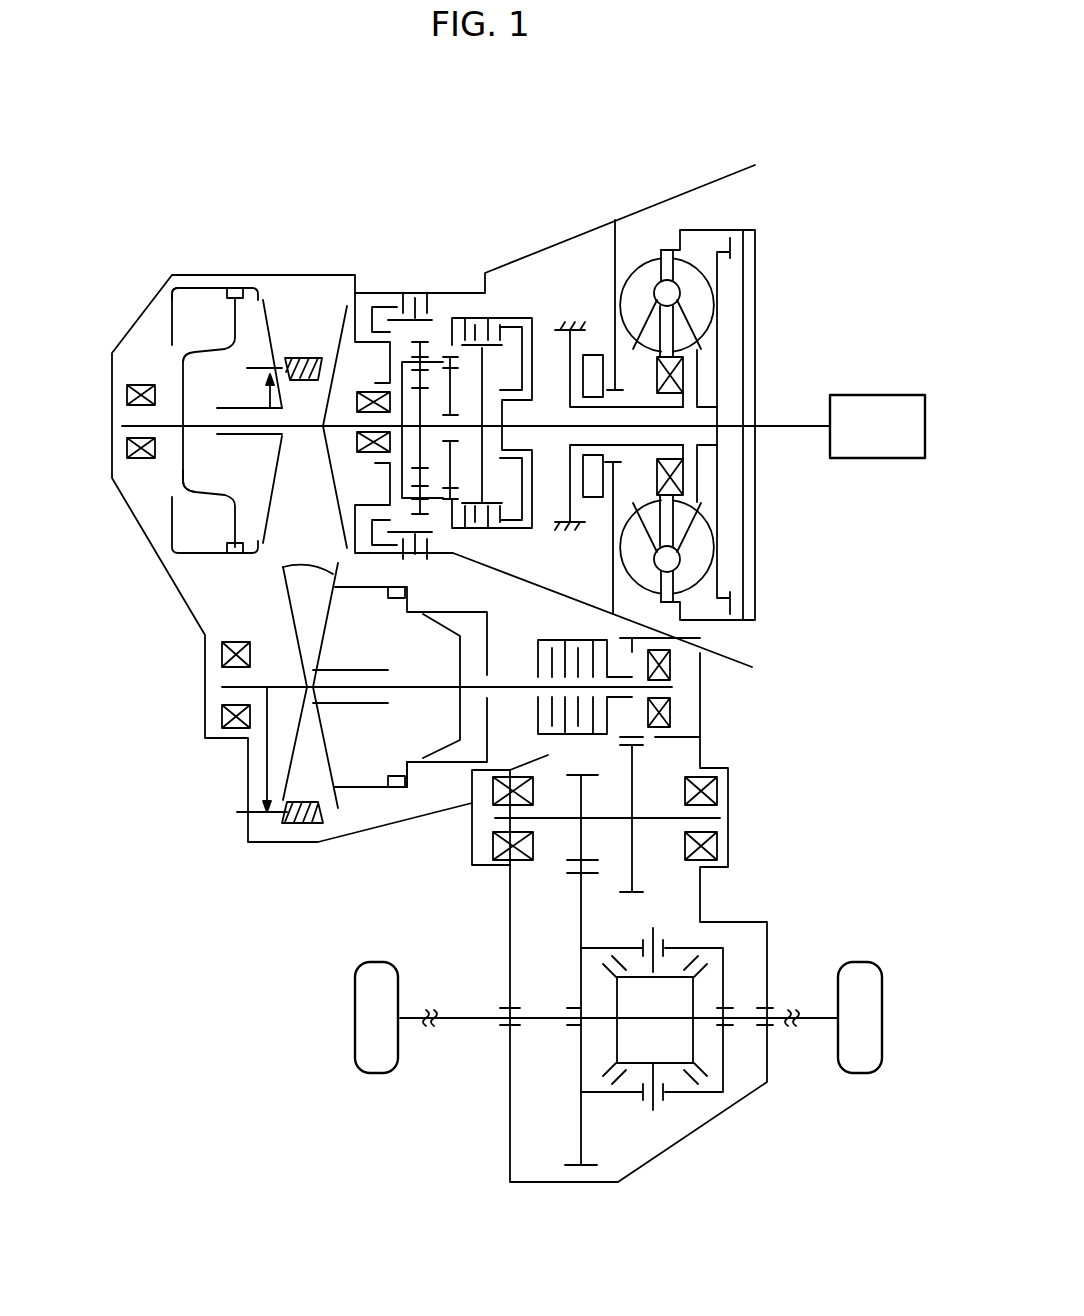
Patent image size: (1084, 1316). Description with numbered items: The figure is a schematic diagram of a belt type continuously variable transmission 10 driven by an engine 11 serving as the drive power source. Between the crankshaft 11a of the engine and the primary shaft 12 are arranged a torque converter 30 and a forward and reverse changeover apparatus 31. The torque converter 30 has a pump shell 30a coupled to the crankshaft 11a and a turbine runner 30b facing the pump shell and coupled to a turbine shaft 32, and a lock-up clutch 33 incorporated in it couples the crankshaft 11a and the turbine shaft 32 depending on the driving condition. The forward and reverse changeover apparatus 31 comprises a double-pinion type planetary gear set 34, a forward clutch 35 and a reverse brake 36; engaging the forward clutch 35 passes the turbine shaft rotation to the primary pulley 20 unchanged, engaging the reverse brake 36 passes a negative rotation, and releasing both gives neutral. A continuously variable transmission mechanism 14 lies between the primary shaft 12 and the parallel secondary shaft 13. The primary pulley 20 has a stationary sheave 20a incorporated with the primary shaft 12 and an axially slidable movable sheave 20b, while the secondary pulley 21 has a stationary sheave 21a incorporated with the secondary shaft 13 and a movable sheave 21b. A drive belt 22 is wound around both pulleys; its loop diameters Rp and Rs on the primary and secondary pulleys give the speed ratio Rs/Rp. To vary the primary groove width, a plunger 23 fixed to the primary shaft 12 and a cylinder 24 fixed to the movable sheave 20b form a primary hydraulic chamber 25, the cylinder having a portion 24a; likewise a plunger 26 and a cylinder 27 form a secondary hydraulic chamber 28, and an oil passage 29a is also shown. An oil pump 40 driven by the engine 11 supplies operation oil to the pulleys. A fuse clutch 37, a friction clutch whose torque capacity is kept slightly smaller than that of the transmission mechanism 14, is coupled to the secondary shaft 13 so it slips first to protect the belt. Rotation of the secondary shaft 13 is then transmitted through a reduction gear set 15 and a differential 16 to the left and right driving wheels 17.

The continuously variable transmission 10 is at (213, 175).
The engine 11 is at (905, 402).
The crankshaft 11a is at (795, 428).
The primary shaft 12 is at (125, 424).
The secondary shaft 13 is at (230, 687).
The continuously variable transmission mechanism 14 is at (228, 571).
The reduction gear set 15 is at (668, 763).
The differential 16 is at (695, 1103).
The driving wheels 17 is at (378, 1073).
The primary pulley 20 is at (288, 354).
The stationary sheave 20a is at (334, 376).
The movable sheave 20b is at (282, 300).
The secondary pulley 21 is at (227, 685).
The stationary sheave 21a is at (283, 596).
The movable sheave 21b is at (283, 568).
The drive belt 22 is at (306, 824).
The plunger 23 is at (207, 352).
The cylinder 24 is at (210, 290).
The piston portion 24a is at (165, 505).
The primary hydraulic chamber 25 is at (193, 473).
The plunger 26 is at (438, 752).
The cylinder 27 is at (372, 789).
The secondary hydraulic chamber 28 is at (447, 660).
The oil passage 29a is at (185, 292).
The torque converter 30 is at (703, 370).
The pump shell 30a is at (645, 267).
The turbine runner 30b is at (703, 305).
The forward and reverse changeover apparatus 31 is at (479, 471).
The turbine shaft 32 is at (546, 428).
The lock-up clutch 33 is at (723, 540).
The double-pinion type planetary gear set 34 is at (437, 520).
The forward clutch 35 is at (464, 300).
The reverse brake 36 is at (404, 285).
The fuse clutch 37 is at (530, 714).
The oil pump 40 is at (593, 497).
The loop diameter of the drive belt on the primary pulley Rp is at (266, 397).
The loop diameter of the drive belt on the secondary pulley Rs is at (266, 770).